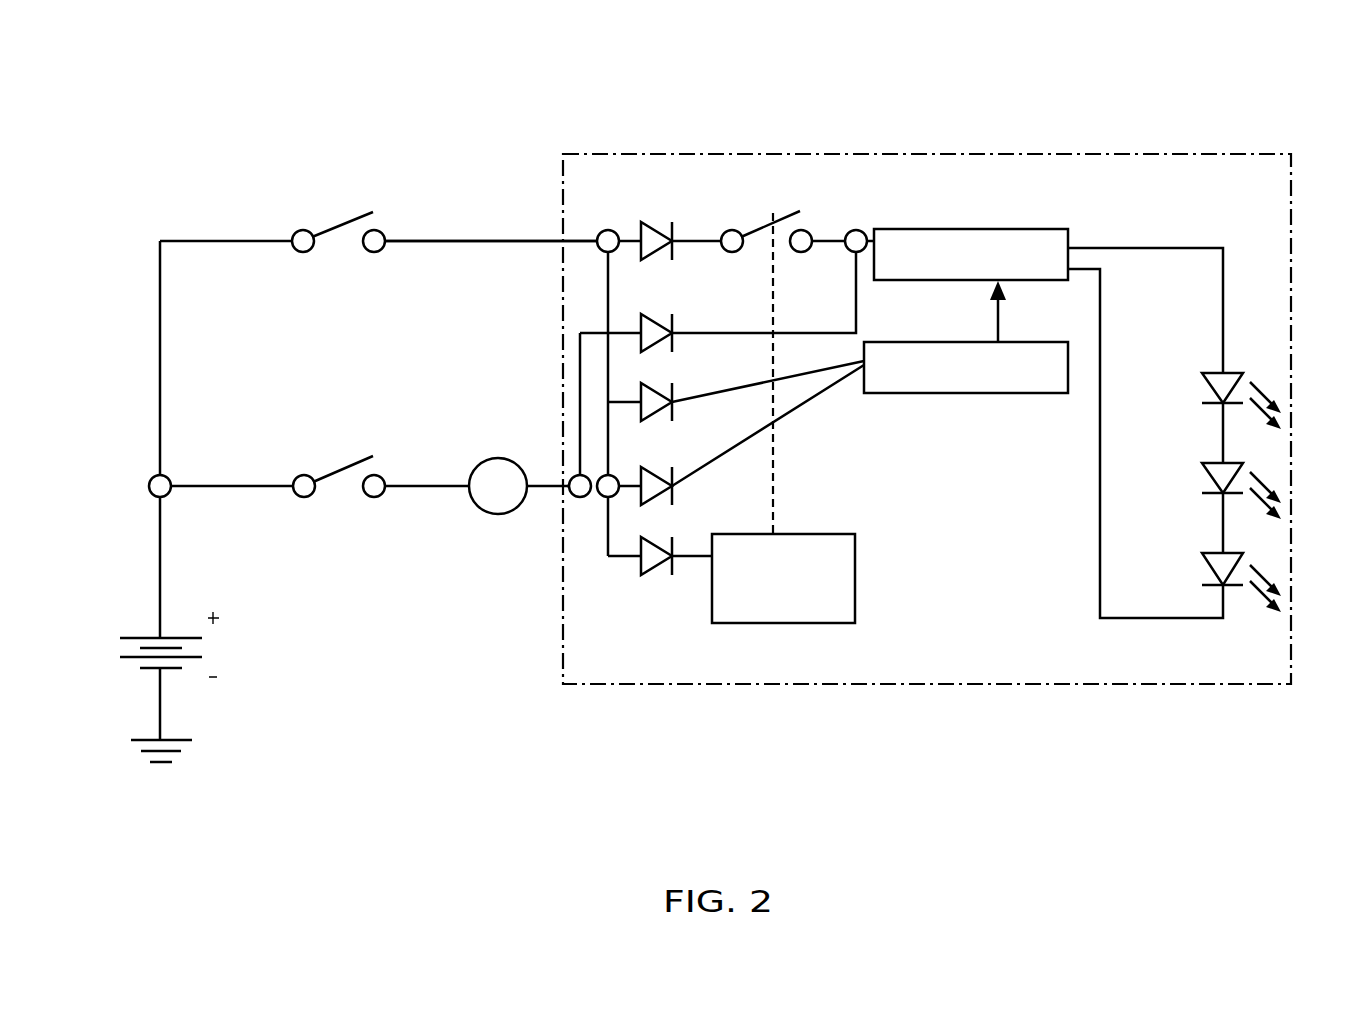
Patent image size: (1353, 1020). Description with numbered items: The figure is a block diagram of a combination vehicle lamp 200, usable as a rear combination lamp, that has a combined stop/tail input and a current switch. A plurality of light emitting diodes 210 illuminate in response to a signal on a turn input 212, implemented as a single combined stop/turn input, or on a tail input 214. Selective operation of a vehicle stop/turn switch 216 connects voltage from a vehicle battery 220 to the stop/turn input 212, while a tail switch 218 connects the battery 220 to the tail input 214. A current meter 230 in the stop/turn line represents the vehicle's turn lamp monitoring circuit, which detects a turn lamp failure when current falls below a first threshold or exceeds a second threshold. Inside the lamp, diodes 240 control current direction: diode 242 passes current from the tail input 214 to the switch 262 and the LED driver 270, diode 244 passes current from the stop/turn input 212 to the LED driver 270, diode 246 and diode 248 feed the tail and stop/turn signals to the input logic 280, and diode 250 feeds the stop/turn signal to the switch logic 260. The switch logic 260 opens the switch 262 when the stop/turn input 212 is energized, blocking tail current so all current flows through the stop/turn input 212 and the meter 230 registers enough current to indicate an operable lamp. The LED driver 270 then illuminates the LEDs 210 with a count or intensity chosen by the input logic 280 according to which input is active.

The vehicle lamp 200 is at (1103, 153).
The light emitting diodes 210 is at (1264, 360).
The turn input 212 is at (425, 485).
The tail input 214 is at (470, 240).
The stop/turn switch 216 is at (333, 456).
The tail switch 218 is at (333, 211).
The vehicle battery 220 is at (145, 618).
The current meter 230 is at (484, 460).
The diodes 240 is at (684, 231).
The diode 242 is at (643, 221).
The diode 244 is at (672, 320).
The diode 246 is at (643, 383).
The diode 248 is at (672, 489).
The diode 250 is at (645, 577).
The switch logic 260 is at (858, 574).
The switch 262 is at (803, 188).
The LED driver 270 is at (1072, 240).
The input logic 280 is at (968, 396).